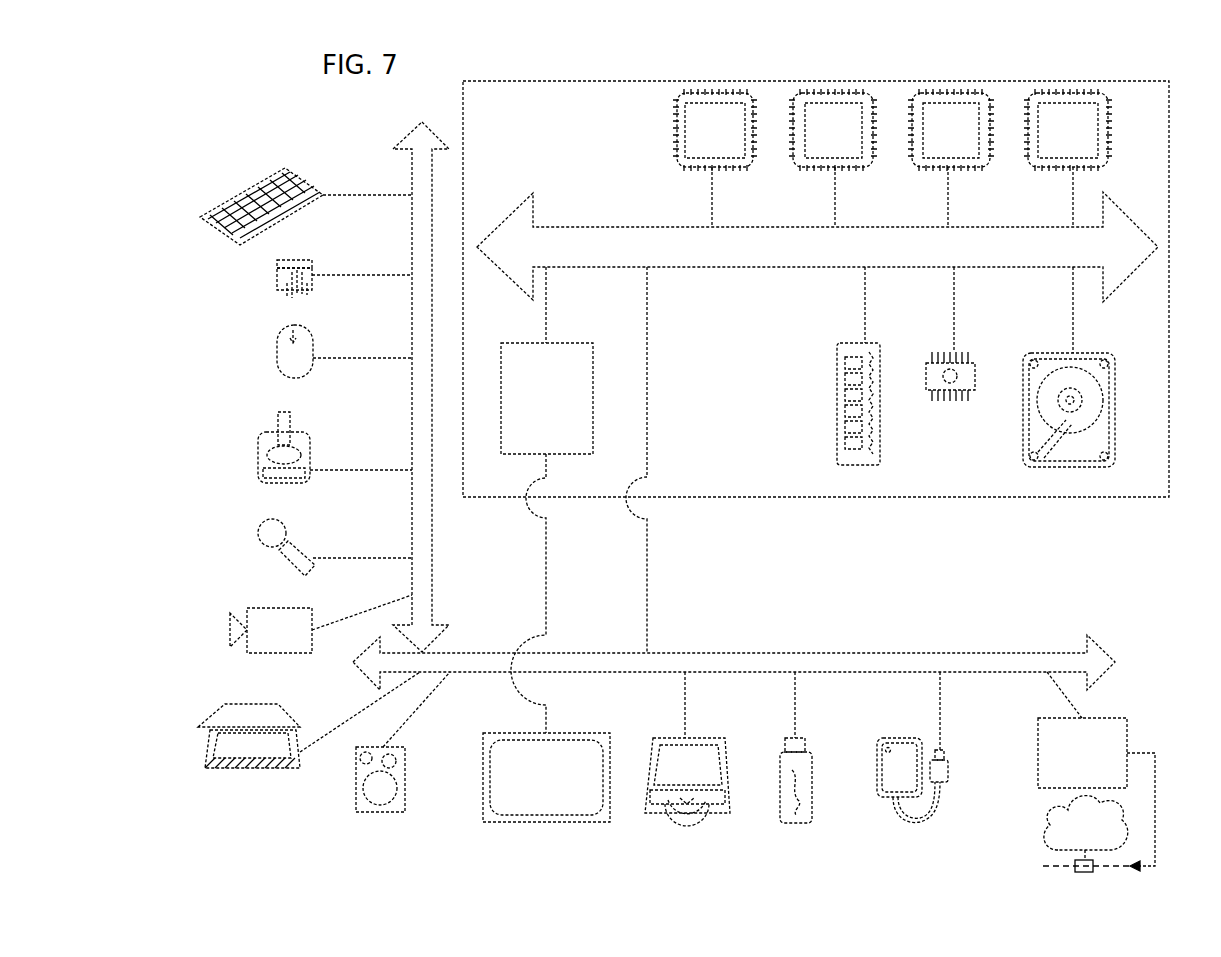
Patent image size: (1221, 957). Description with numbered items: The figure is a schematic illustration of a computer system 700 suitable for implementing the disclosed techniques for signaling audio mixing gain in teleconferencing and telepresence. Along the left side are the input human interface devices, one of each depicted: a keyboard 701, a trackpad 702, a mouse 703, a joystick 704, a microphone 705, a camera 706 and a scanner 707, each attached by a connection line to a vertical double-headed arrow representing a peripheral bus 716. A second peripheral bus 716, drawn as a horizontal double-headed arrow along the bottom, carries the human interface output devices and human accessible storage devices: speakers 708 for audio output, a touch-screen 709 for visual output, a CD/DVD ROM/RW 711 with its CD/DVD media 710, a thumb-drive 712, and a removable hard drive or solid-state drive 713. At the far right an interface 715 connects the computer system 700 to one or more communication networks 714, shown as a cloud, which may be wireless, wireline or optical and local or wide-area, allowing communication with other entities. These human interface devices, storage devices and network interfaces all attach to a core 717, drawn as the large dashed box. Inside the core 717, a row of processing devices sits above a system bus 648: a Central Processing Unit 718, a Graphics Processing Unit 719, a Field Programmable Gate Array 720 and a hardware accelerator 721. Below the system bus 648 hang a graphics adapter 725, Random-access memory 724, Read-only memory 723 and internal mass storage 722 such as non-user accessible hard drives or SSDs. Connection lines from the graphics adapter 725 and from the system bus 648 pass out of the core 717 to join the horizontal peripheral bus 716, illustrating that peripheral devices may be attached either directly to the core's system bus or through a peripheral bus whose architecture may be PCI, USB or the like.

The computer system 700 is at (222, 104).
The keyboard 701 is at (200, 226).
The trackpad 702 is at (270, 285).
The mouse 703 is at (270, 352).
The joystick 704 is at (258, 465).
The microphone 705 is at (258, 538).
The camera 706 is at (230, 634).
The scanner 707 is at (200, 755).
The speakers 708 is at (380, 812).
The touch-screen 709 is at (548, 822).
The CD/DVD media 710 is at (672, 820).
The CD/DVD ROM/RW 711 is at (718, 818).
The thumb-drive 712 is at (792, 823).
The removable hard drive or solid-state drive 713 is at (878, 800).
The communication networks 714 is at (1042, 840).
The interface 715 is at (1096, 772).
The peripheral bus 716 is at (410, 155).
The core 717 is at (810, 497).
The Central Processing Unit 718 is at (715, 158).
The Graphics Processing Unit 719 is at (833, 158).
The Field Programmable Gate Array 720 is at (951, 158).
The hardware accelerator 721 is at (1068, 158).
The internal mass storage 722 is at (1038, 335).
The Read-only memory 723 is at (942, 401).
The Random-access memory 724 is at (838, 418).
The graphics adapter 725 is at (547, 500).
The system bus 648 is at (817, 247).